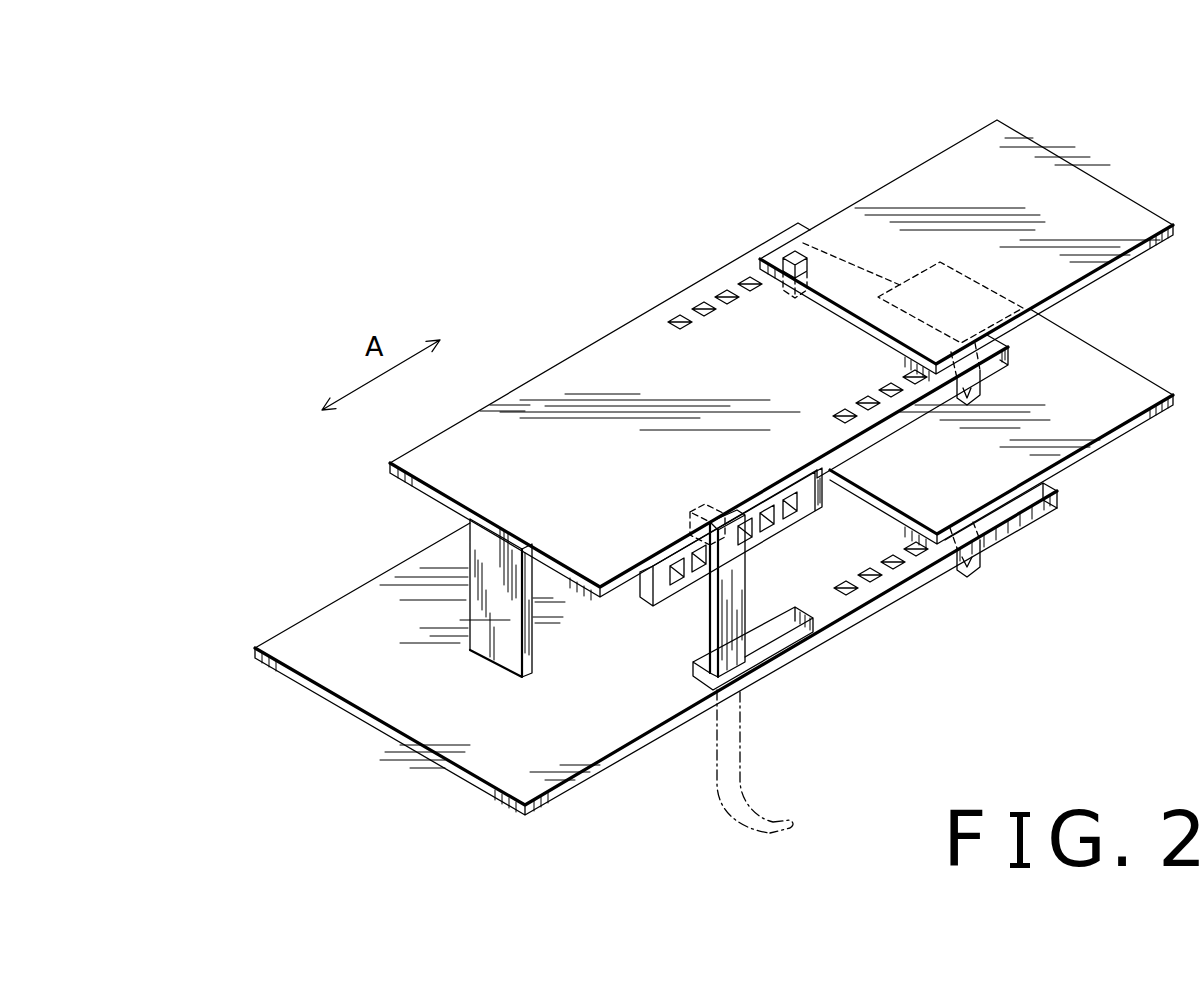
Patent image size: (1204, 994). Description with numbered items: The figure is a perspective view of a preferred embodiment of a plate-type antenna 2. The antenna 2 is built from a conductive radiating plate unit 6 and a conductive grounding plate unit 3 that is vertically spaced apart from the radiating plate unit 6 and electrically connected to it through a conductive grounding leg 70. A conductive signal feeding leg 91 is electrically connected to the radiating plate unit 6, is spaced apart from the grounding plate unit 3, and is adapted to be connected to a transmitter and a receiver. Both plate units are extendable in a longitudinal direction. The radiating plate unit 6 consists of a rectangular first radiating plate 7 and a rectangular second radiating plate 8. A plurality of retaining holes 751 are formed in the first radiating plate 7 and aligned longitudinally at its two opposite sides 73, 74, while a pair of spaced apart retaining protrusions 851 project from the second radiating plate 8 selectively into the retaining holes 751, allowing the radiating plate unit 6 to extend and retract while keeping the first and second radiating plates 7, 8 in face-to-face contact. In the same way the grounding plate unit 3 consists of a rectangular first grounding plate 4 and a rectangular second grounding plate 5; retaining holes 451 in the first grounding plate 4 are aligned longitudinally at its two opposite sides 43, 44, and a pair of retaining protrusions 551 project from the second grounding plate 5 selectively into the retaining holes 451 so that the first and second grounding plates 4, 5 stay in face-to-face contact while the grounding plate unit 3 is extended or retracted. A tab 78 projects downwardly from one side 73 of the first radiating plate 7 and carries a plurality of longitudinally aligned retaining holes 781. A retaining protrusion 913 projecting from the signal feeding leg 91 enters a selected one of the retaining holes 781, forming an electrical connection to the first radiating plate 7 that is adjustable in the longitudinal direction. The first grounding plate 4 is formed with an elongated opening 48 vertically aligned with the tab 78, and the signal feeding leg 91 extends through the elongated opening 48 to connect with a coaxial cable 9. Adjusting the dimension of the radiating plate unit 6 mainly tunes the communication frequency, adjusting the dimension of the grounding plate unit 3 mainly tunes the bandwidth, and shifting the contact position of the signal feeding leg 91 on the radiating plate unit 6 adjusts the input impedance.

The plate-type antenna 2 is at (553, 136).
The second radiating plate 8 is at (1017, 150).
The radiating plate unit 6 is at (733, 250).
The retaining holes 751 is at (730, 274).
The side of the first radiating plate 74 is at (673, 300).
The first radiating plate 7 is at (477, 400).
The second grounding plate 5 is at (1118, 388).
The retaining protrusions 851 is at (975, 400).
The side of the first radiating plate 73 is at (873, 435).
The retaining protrusion 913 is at (687, 513).
The side of the first grounding plate 44 is at (363, 583).
The grounding leg 70 is at (487, 625).
The retaining protrusions 551 is at (980, 555).
The retaining holes 451 is at (897, 560).
The tab 78 is at (648, 603).
The retaining holes 781 is at (676, 582).
The grounding plate unit 3 is at (907, 707).
The signal feeding leg 91 is at (712, 652).
The side of the first grounding plate 43 is at (838, 628).
The elongated opening 48 is at (707, 672).
The coaxial cable 9 is at (755, 763).
The first grounding plate 4 is at (558, 773).